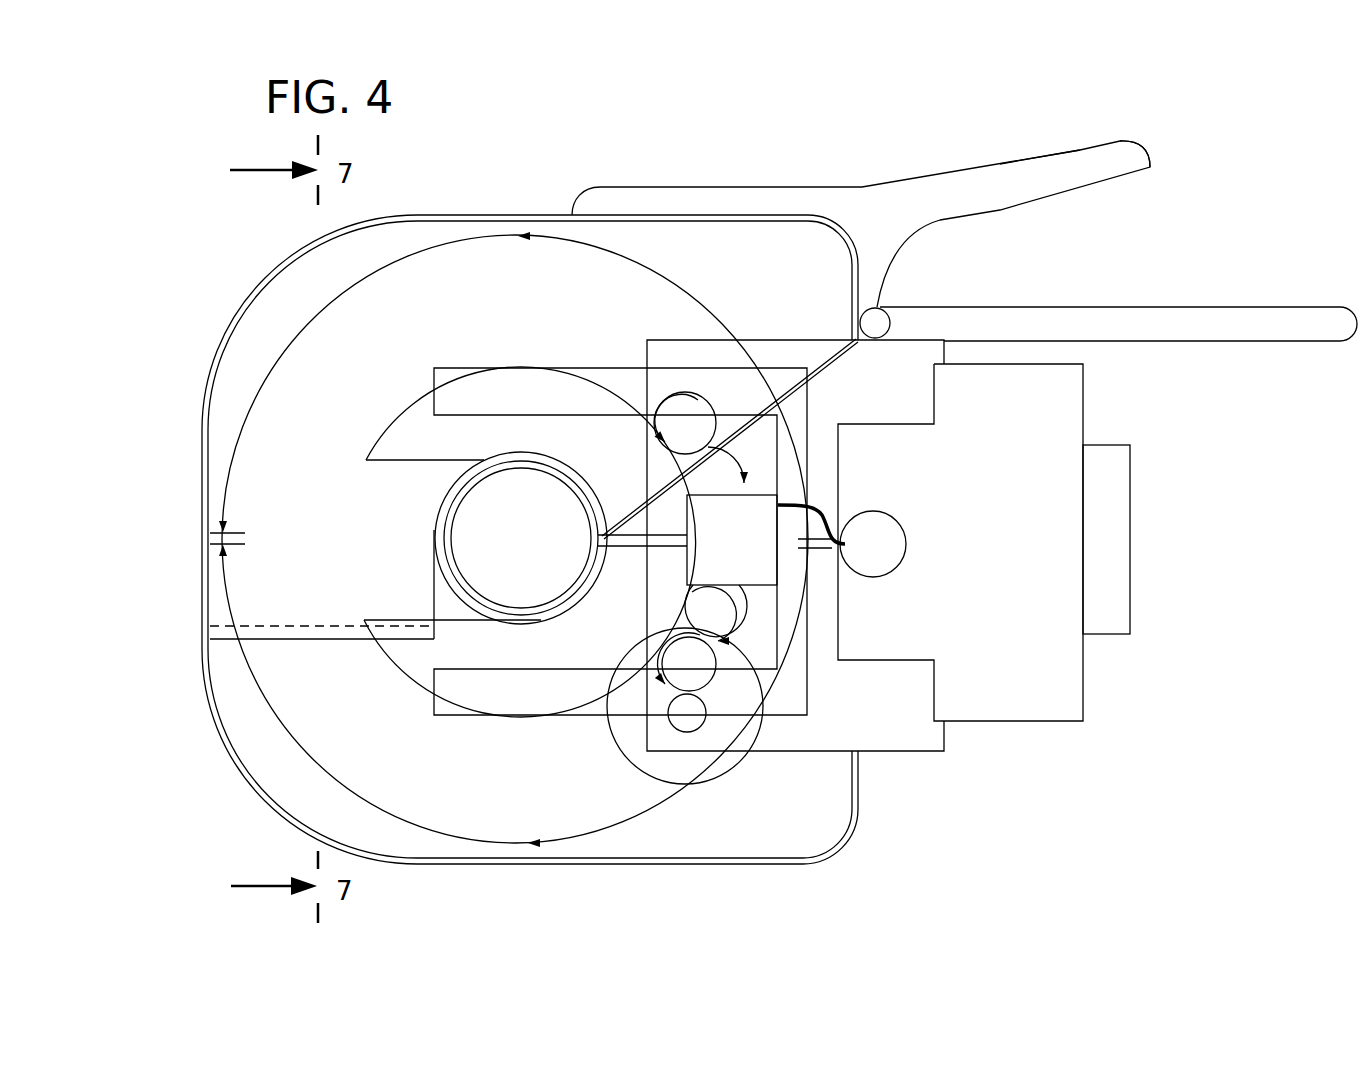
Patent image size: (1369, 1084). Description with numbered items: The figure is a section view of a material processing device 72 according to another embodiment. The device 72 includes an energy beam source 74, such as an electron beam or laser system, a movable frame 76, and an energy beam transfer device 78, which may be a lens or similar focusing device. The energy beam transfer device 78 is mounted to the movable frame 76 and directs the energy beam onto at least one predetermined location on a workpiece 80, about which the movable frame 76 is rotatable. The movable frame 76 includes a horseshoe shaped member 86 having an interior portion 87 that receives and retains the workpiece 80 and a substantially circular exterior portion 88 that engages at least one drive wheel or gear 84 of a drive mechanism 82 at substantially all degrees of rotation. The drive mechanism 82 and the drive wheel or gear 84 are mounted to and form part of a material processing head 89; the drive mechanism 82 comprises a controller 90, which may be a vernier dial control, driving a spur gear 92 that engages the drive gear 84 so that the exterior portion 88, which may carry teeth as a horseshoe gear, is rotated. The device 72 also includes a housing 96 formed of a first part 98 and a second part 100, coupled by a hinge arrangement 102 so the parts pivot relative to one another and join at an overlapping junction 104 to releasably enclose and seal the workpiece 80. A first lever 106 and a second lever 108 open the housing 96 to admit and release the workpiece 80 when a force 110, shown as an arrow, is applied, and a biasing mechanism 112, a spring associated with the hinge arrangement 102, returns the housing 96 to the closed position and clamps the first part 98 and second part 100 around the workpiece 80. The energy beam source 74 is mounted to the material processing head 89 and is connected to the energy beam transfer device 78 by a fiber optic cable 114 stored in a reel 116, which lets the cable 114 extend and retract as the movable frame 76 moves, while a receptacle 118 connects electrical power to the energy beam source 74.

The material processing device 72 is at (725, 167).
The energy beam source 74 is at (1073, 419).
The movable frame 76 is at (604, 365).
The energy beam transfer device 78 is at (765, 560).
The workpiece 80 is at (447, 562).
The drive mechanism 82 is at (733, 815).
The drive wheel or gear 84 is at (667, 382).
The horseshoe shaped member 86 is at (397, 443).
The interior portion 87 is at (565, 467).
The exterior portion 88 is at (413, 403).
The material processing head 89 is at (891, 756).
The controller 90 is at (655, 770).
The spur gear 92 is at (672, 727).
The housing 96 is at (295, 255).
The first part 98 is at (205, 550).
The second part 100 is at (251, 766).
The hinge arrangement 102 is at (873, 316).
The overlapping junction 104 is at (210, 640).
The first lever 106 is at (1102, 148).
The second lever 108 is at (1242, 312).
The force 110 is at (1053, 152).
The biasing mechanism 112 is at (893, 327).
The fiber optic cable 114 is at (817, 514).
The reel 116 is at (894, 536).
The receptacle 118 is at (1131, 491).